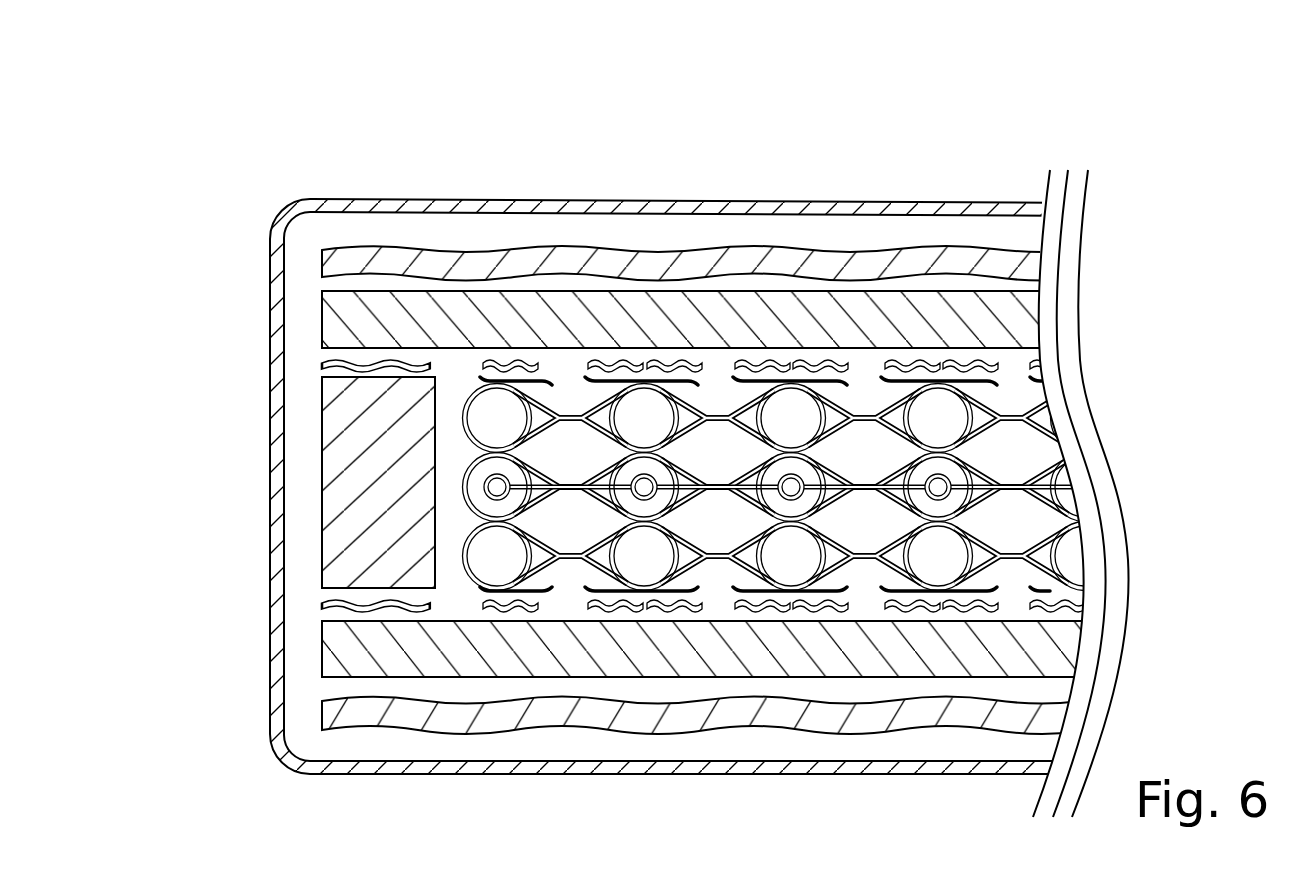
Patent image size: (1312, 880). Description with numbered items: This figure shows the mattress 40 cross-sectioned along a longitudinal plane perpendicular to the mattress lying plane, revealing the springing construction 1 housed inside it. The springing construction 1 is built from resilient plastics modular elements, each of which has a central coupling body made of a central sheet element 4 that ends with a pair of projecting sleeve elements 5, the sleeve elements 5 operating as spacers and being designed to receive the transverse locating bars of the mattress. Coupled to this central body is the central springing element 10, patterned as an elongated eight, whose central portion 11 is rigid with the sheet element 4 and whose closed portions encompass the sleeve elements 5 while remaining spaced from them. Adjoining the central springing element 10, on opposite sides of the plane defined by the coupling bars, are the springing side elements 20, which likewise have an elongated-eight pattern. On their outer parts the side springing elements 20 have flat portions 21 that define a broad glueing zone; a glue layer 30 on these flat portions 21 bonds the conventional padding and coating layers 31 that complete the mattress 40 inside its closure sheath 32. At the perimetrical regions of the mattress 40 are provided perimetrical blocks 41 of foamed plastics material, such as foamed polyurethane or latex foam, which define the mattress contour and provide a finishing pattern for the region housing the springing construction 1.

The springing construction 1 is at (832, 367).
The central sheet element 4 is at (948, 480).
The sleeve elements 5 is at (968, 478).
The central springing element 10 is at (832, 455).
The central portion 11 is at (940, 432).
The springing side elements 20 is at (832, 367).
The flat portions 21 is at (757, 383).
The glue layer 30 is at (528, 362).
The padding and coating layers 31 is at (665, 280).
The closure sheath 32 is at (540, 210).
The mattress 40 is at (686, 461).
The perimetrical blocks 41 is at (345, 487).